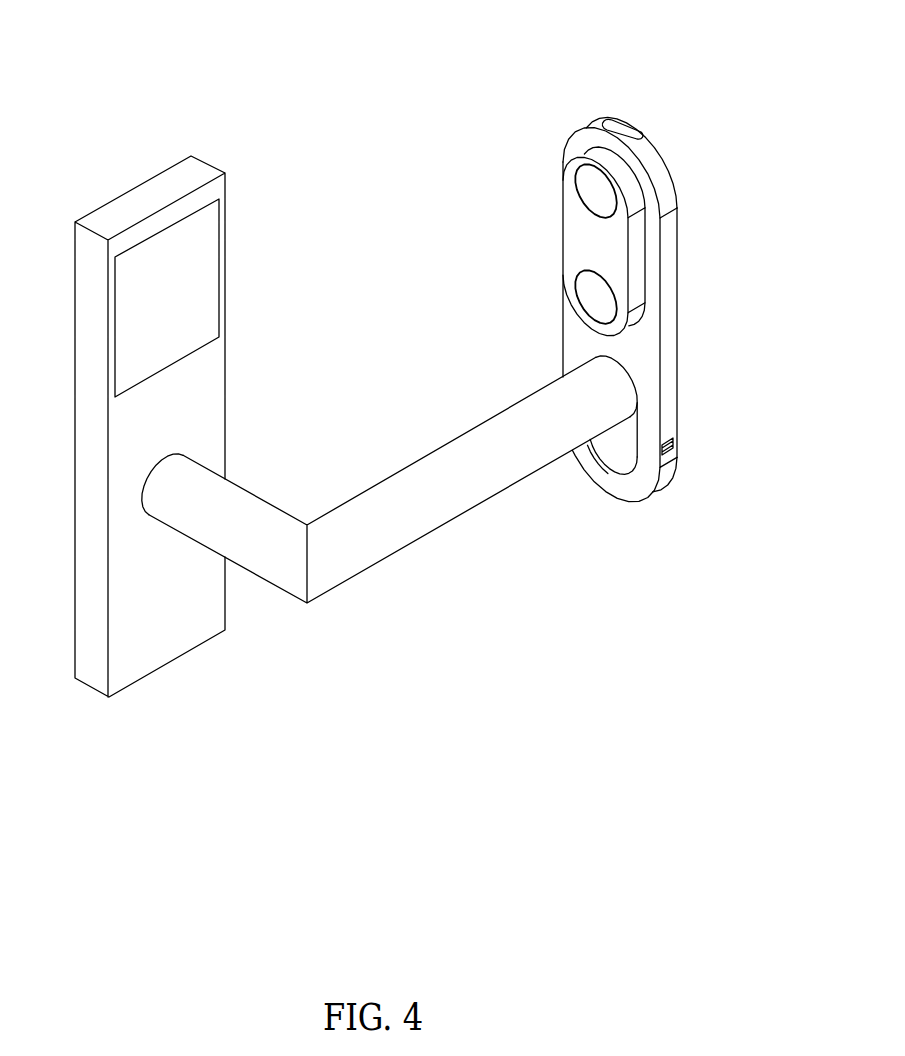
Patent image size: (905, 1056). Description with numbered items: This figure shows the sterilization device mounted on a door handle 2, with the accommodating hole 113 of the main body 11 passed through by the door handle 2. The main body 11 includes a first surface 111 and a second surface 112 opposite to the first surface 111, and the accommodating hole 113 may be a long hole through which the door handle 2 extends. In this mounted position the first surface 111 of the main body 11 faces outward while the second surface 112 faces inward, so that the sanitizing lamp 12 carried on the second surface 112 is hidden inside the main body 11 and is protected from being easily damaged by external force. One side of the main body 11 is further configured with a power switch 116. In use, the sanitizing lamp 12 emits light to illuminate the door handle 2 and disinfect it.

The door handle 2 is at (420, 511).
The main body 11 is at (599, 301).
The first surface 111 is at (678, 312).
The second surface 112 is at (575, 333).
The accommodating hole 113 is at (625, 442).
The power switch 116 is at (622, 127).
The sanitizing lamp 12 is at (575, 237).